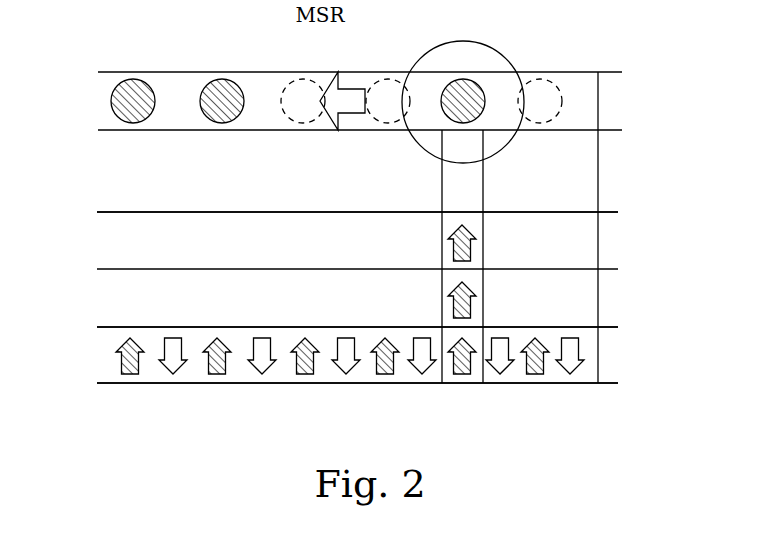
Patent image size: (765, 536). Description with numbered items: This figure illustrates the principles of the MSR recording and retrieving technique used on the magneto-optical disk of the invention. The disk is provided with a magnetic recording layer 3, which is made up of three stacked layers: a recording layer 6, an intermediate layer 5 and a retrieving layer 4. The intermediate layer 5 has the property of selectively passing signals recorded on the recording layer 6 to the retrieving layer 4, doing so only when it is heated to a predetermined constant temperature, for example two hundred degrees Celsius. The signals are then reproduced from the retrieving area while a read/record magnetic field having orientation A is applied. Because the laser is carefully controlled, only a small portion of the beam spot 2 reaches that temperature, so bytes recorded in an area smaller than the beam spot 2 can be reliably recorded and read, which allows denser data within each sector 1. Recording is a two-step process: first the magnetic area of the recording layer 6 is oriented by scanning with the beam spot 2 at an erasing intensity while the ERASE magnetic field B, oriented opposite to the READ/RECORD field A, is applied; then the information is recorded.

The sector 1 is at (583, 82).
The beam spot 2 is at (483, 44).
The magnetic recording layer 3 is at (331, 316).
The retrieving layer 4 is at (606, 224).
The intermediate layer 5 is at (604, 311).
The recording layer 6 is at (607, 378).
The read/record magnetic field A is at (471, 366).
The erase magnetic field B is at (509, 358).